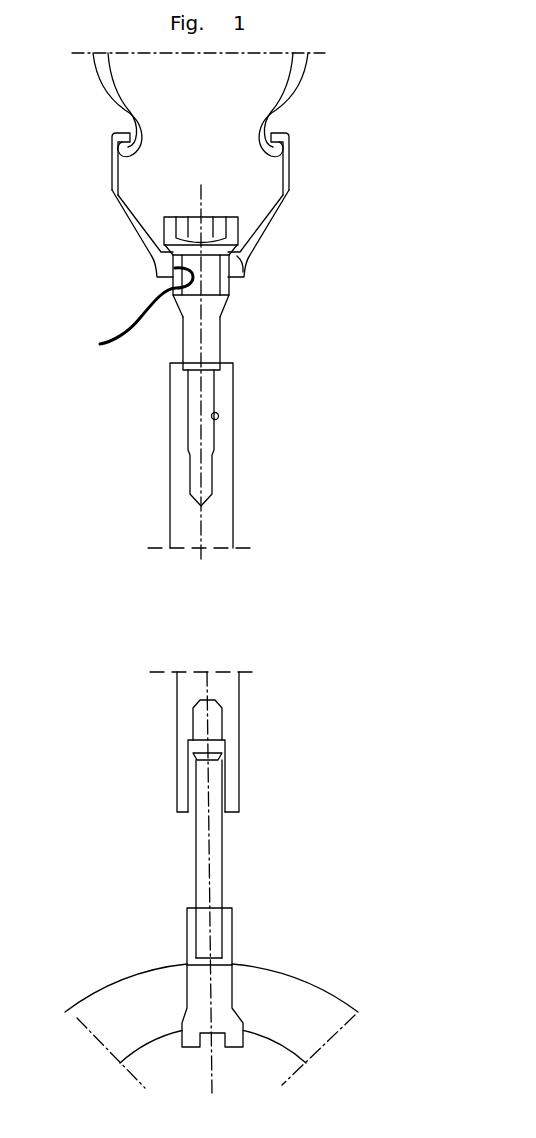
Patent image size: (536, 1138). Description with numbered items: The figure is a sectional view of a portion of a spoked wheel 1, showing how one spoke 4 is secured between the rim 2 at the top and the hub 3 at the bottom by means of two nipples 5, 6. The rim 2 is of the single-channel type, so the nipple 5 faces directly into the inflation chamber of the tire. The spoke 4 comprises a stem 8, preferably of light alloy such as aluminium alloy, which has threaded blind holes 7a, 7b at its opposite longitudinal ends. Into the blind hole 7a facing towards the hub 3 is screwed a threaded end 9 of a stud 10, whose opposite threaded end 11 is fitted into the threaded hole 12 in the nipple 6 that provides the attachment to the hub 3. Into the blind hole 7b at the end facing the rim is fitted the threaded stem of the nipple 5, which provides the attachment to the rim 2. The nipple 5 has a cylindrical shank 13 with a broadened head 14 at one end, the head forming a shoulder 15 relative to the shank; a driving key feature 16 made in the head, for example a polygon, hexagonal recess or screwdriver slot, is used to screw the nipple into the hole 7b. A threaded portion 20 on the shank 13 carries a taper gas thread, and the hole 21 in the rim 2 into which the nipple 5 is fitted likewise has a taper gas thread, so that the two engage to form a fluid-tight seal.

The wheel 1 is at (257, 560).
The rim 2 is at (158, 268).
The hub 3 is at (108, 995).
The spoke 4 is at (204, 462).
The nipple 5 is at (168, 342).
The nipple 6 is at (219, 1004).
The threaded blind hole 7a is at (188, 767).
The threaded blind hole 7b is at (219, 419).
The stem 8 is at (182, 517).
The threaded end 9 is at (212, 767).
The stud 10 is at (201, 852).
The threaded end 11 is at (203, 913).
The threaded hole 12 is at (199, 937).
The cylindrical shank 13 is at (230, 323).
The broadened head 14 is at (203, 219).
The shoulder 15 is at (237, 276).
The driving key feature 16 is at (183, 220).
The threaded portion 20 is at (224, 289).
The hole 21 is at (134, 314).